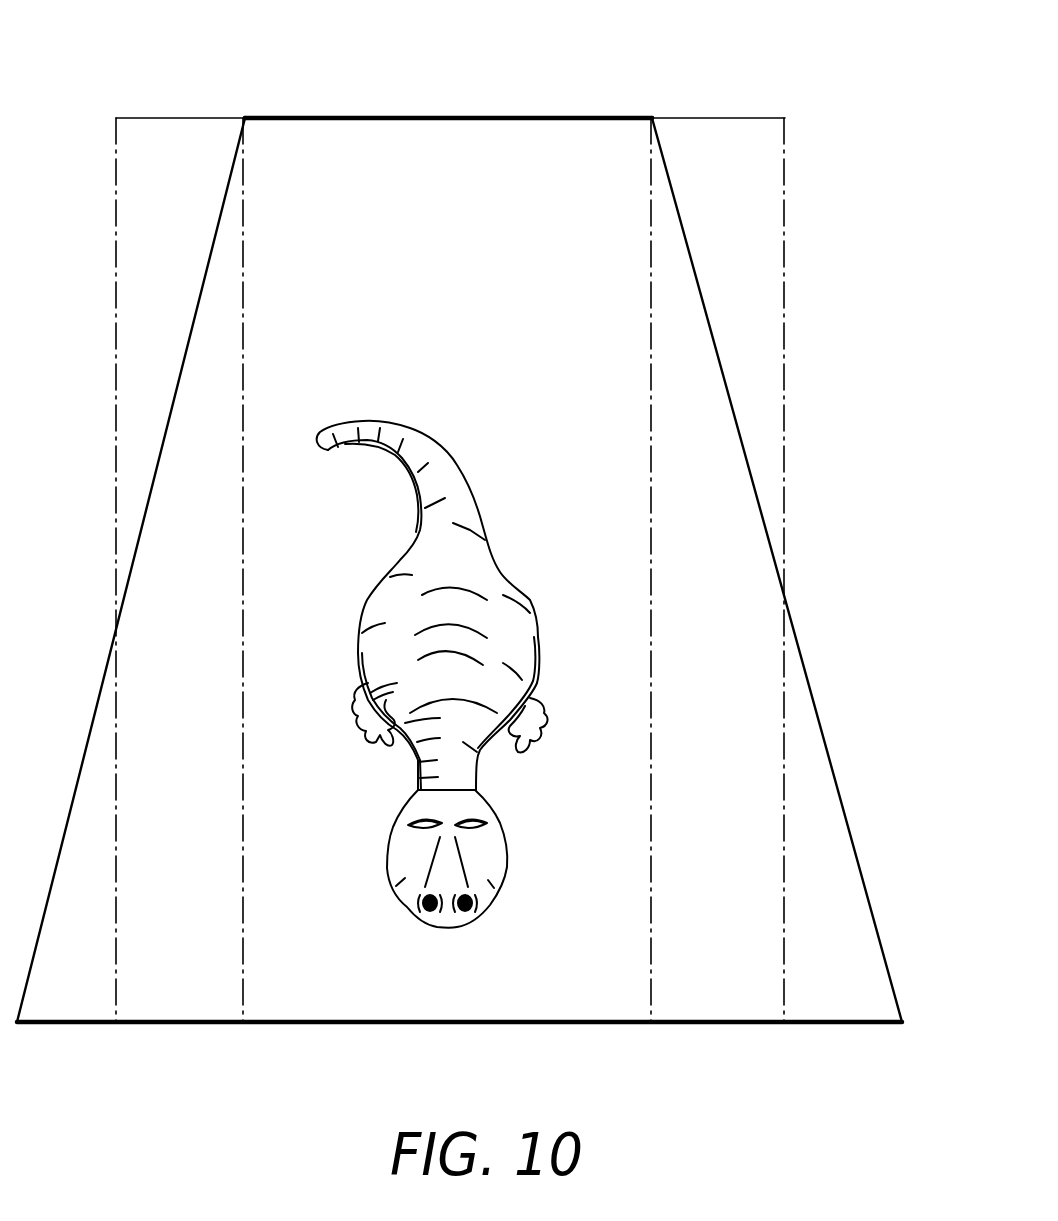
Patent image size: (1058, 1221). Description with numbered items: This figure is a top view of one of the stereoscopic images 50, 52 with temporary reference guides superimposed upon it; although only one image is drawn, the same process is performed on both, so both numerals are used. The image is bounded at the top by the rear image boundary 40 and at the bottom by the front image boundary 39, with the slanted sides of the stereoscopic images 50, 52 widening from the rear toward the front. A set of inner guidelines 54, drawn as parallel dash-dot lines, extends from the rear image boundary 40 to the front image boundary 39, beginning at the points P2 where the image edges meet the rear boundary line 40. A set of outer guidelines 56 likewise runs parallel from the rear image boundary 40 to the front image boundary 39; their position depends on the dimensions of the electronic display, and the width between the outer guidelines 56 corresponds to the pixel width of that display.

The rear image boundary 40 is at (442, 118).
The front image boundary 39 is at (614, 1024).
The outer guidelines 56 is at (116, 365).
The inner guidelines 54 is at (243, 370).
The stereoscopic image 50 is at (795, 570).
The stereoscopic image 52 is at (810, 686).
The points P2 is at (245, 118).